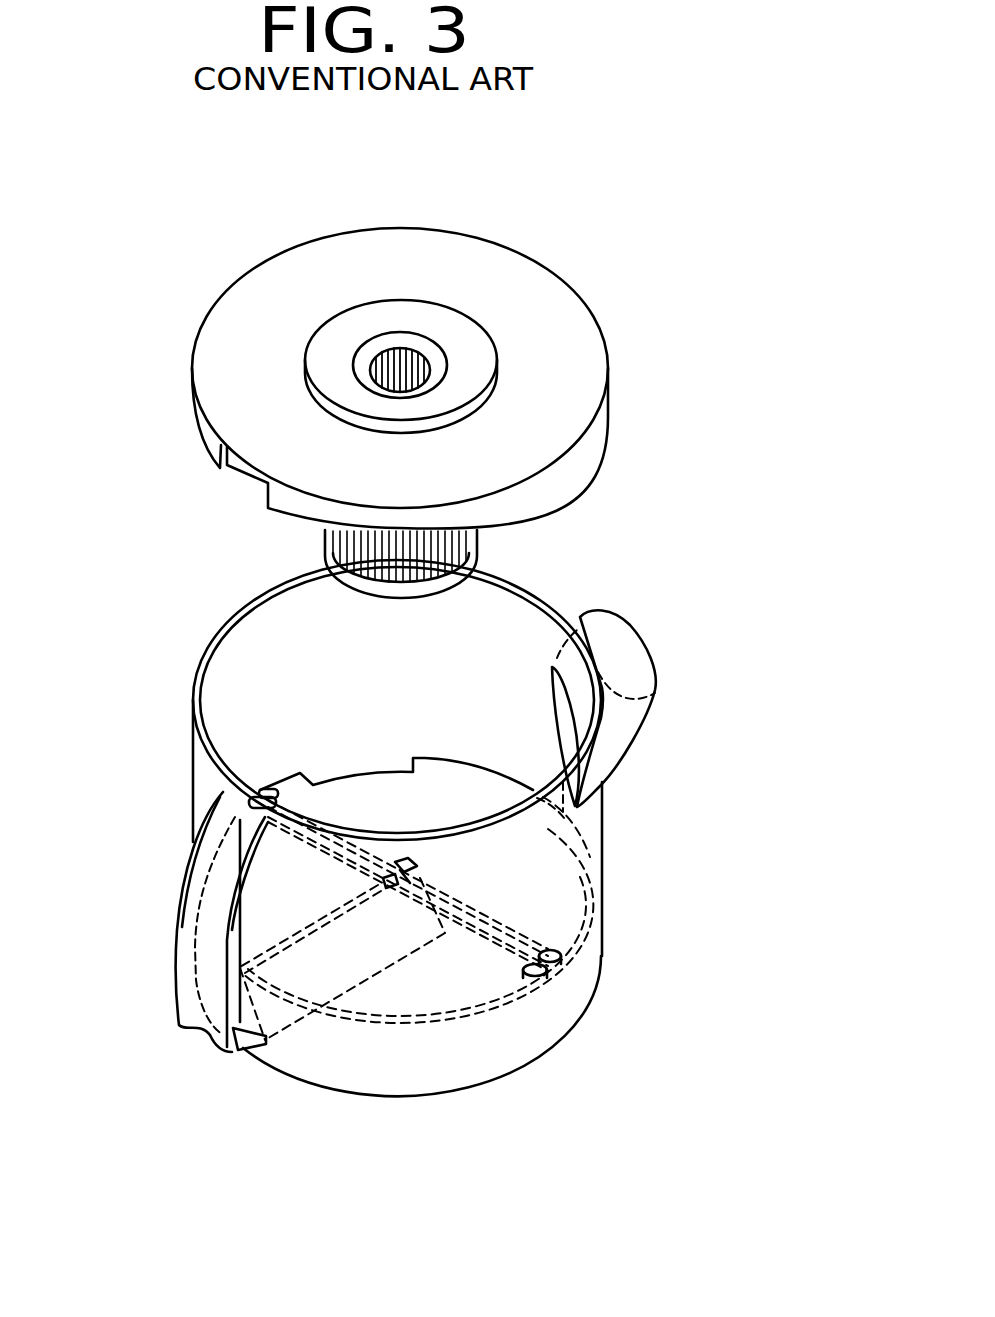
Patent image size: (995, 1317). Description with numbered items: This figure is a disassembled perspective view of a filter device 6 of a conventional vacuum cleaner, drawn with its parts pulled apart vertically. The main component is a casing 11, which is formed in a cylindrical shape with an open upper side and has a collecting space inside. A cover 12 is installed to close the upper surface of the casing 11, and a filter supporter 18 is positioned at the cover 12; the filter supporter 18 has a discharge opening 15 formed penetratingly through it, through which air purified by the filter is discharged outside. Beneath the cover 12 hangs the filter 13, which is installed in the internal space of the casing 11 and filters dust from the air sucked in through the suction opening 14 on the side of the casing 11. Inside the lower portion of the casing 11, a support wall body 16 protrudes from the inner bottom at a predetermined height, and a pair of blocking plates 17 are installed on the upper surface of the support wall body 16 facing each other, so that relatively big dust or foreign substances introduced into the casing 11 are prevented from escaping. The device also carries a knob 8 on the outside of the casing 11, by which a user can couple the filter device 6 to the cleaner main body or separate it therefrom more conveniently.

The filter device 6 is at (667, 592).
The knob 8 is at (187, 955).
The casing 11 is at (203, 771).
The cover 12 is at (243, 317).
The filter 13 is at (325, 545).
The suction opening 14 is at (618, 728).
The discharge opening 15 is at (420, 357).
The support wall body 16 is at (287, 1017).
The blocking plates 17 is at (363, 808).
The filter supporter 18 is at (462, 379).